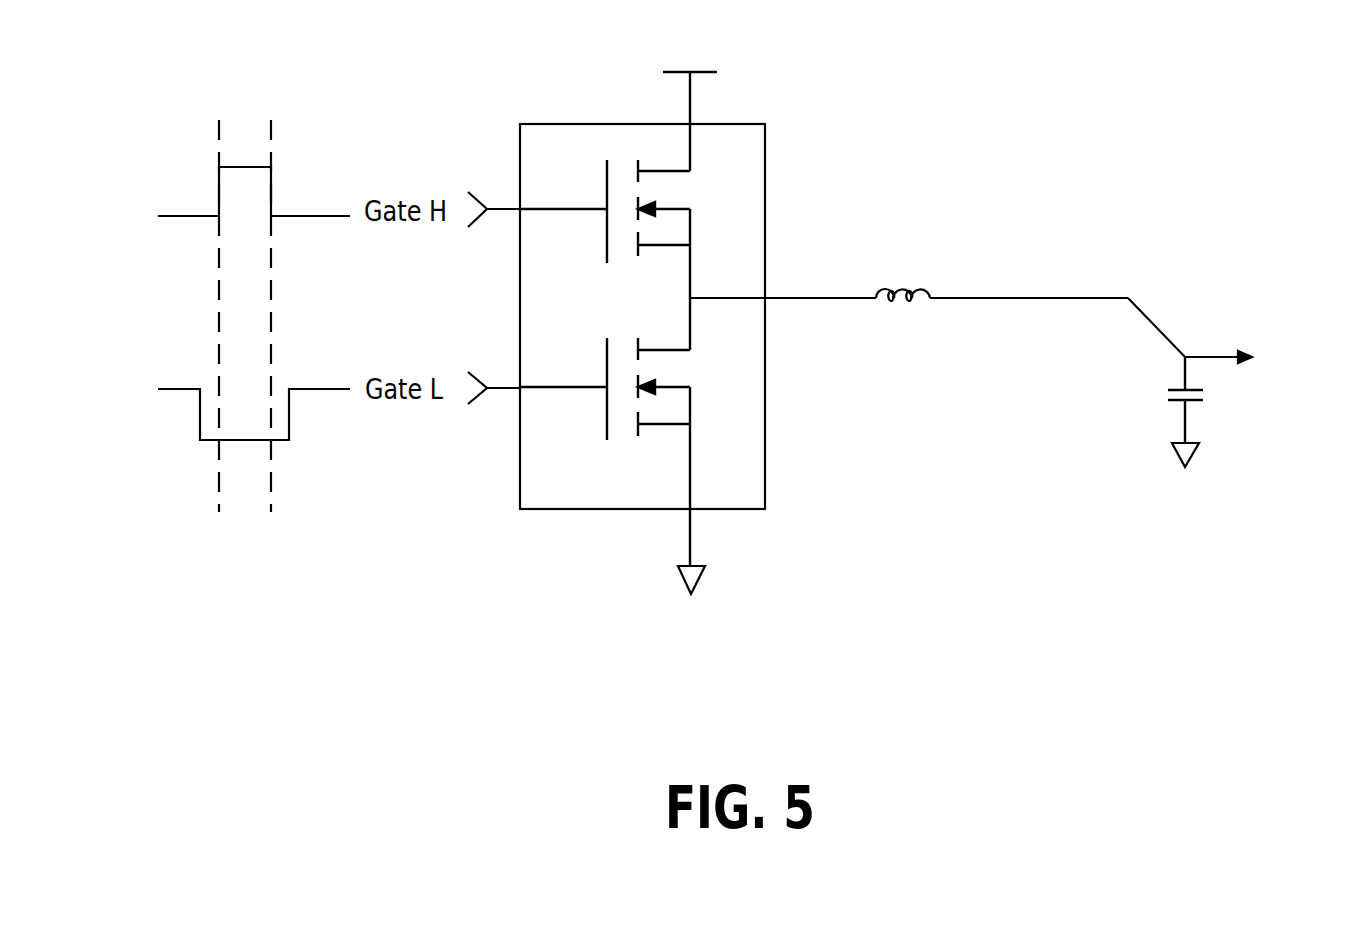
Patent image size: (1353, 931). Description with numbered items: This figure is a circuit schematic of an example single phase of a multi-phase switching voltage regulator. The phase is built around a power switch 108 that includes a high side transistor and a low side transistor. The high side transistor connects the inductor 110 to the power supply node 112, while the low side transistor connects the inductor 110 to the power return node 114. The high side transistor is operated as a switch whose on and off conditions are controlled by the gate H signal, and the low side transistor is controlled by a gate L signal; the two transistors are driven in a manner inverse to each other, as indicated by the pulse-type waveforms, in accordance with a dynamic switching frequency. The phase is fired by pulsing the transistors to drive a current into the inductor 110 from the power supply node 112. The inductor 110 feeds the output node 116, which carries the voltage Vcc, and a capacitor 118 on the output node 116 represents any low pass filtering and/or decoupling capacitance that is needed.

The power switch 108 is at (548, 511).
The inductor 110 is at (885, 288).
The power supply node 112 is at (690, 110).
The power return node 114 is at (690, 531).
The output node 116 is at (1115, 296).
The capacitor 118 is at (1163, 398).